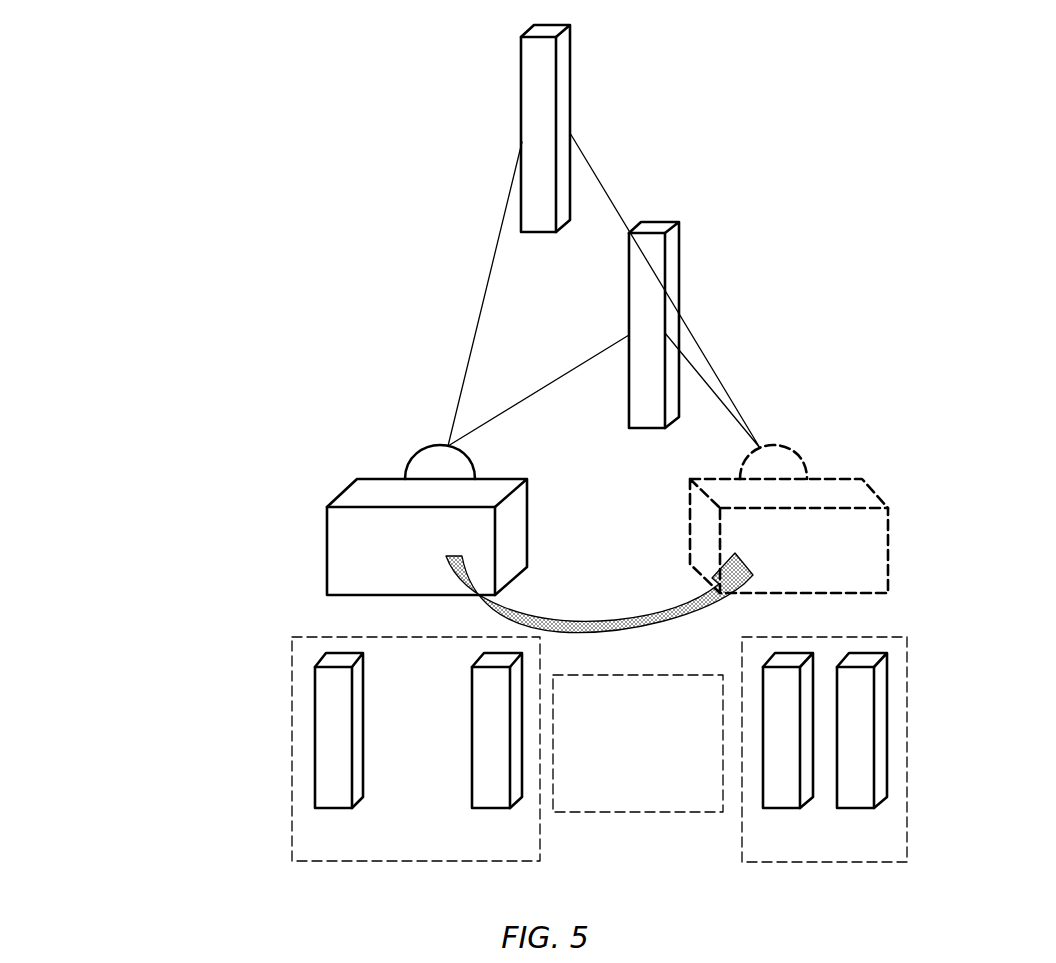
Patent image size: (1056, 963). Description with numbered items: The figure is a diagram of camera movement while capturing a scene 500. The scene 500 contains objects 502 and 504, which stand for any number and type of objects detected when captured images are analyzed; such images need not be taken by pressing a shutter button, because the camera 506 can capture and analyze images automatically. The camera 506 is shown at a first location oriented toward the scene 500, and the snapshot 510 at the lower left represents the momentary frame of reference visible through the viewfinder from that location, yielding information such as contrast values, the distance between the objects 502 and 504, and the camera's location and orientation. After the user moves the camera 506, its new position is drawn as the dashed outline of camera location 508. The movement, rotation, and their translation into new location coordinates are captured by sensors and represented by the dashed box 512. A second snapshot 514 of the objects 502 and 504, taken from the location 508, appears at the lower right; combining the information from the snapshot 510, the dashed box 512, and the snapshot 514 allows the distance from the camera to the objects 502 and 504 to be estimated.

The scene 500 is at (113, 93).
The object 502 is at (571, 71).
The object 504 is at (681, 252).
The camera 506 is at (326, 544).
The camera location 508 is at (889, 546).
The snapshot 510 is at (292, 706).
The dashed box 512 is at (646, 674).
The snapshot 514 is at (908, 710).